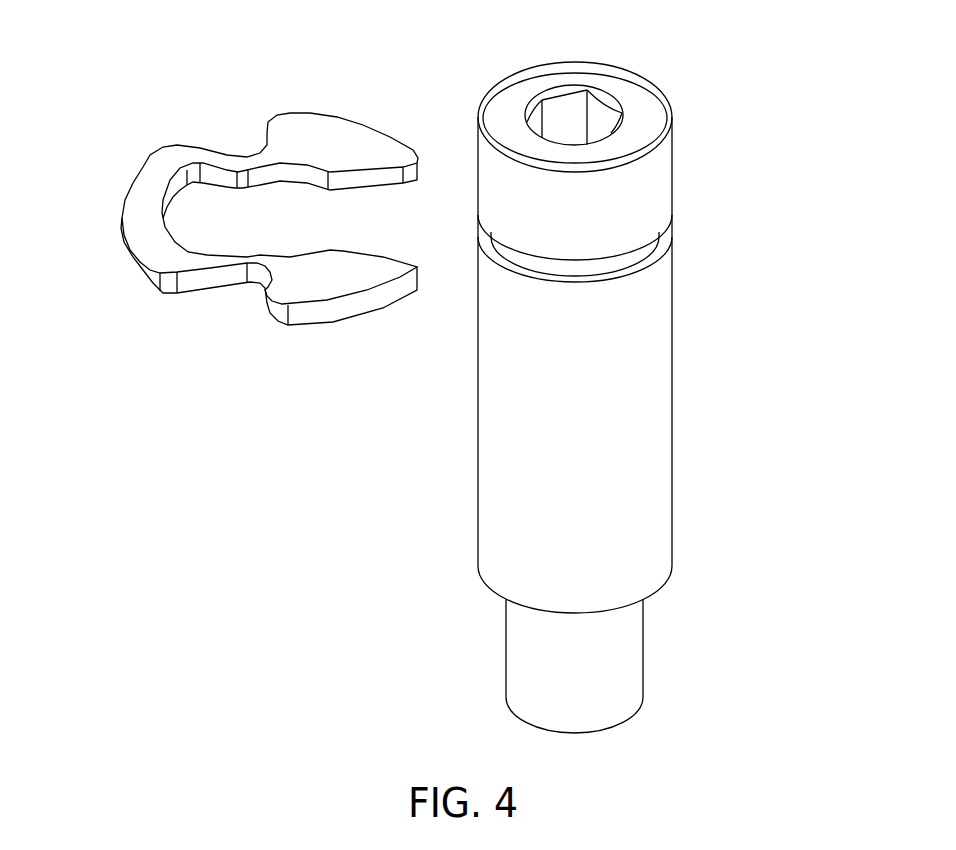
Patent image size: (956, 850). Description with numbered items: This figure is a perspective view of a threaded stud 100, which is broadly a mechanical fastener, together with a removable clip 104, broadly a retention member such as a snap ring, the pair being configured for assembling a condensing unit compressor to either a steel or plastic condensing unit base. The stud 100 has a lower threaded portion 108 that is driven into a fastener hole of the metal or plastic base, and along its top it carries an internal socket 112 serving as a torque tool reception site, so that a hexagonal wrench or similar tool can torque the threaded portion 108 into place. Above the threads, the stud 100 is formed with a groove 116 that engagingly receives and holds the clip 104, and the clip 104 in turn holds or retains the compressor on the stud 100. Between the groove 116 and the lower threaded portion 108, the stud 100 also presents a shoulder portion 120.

The threaded stud 100 is at (495, 58).
The removable clip 104 is at (212, 119).
The lower threaded portion 108 is at (636, 651).
The internal socket 112 is at (625, 98).
The groove 116 is at (676, 223).
The shoulder portion 120 is at (676, 413).